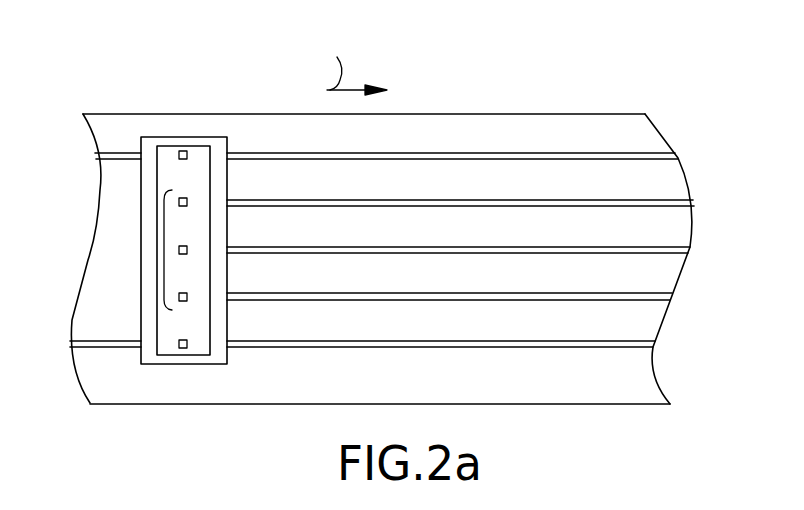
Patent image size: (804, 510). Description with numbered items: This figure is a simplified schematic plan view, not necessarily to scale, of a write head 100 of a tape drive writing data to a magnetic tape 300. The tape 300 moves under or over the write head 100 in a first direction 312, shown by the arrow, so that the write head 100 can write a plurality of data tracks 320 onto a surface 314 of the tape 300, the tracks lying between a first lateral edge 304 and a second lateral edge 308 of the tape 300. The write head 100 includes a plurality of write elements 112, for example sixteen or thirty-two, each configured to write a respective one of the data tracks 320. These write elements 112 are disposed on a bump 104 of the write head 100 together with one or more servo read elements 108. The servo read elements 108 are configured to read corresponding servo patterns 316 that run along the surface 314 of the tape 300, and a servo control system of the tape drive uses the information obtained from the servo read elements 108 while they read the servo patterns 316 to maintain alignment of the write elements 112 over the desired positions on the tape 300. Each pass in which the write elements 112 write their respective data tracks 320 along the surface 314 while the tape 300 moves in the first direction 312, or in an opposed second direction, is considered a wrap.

The write head 100 is at (125, 240).
The bump 104 is at (201, 355).
The servo read elements 108 is at (178, 157).
The write elements 112 is at (160, 250).
The magnetic tape 300 is at (413, 236).
The first lateral edge 304 is at (645, 114).
The second lateral edge 308 is at (528, 404).
The first direction 312 is at (349, 62).
The surface 314 is at (607, 124).
The servo patterns 316 is at (667, 153).
The data tracks 320 is at (697, 187).